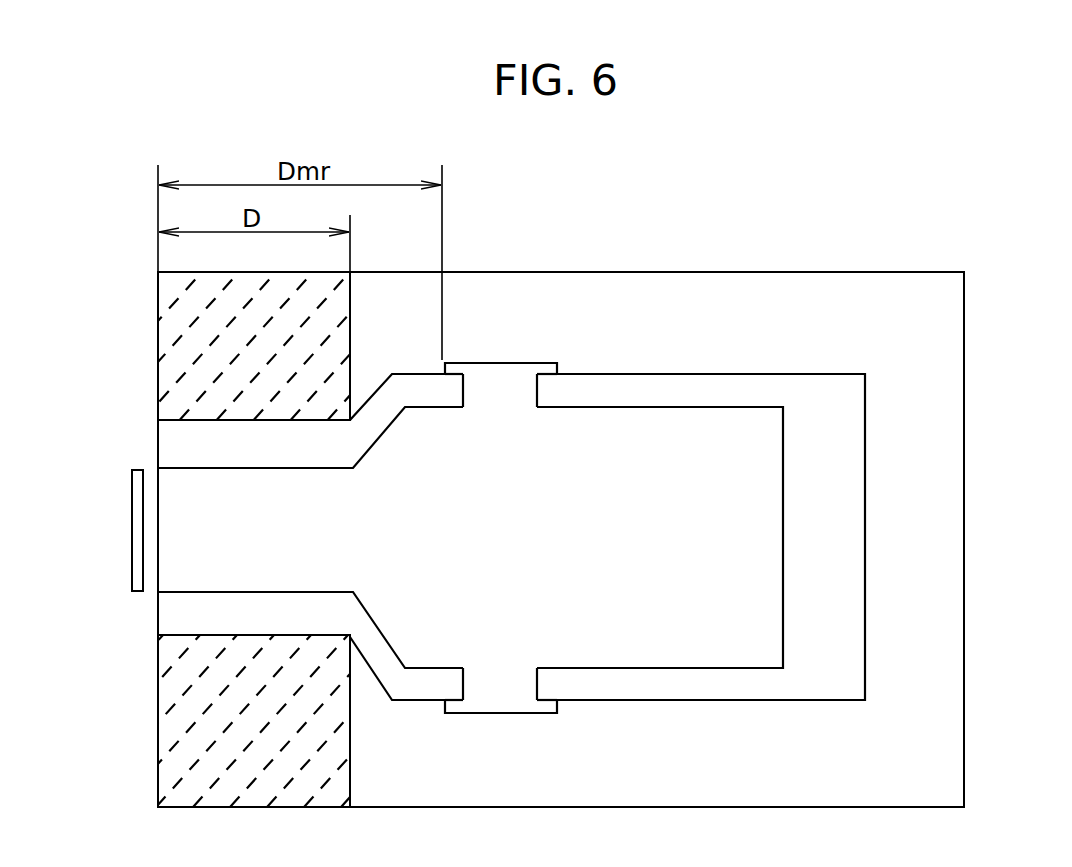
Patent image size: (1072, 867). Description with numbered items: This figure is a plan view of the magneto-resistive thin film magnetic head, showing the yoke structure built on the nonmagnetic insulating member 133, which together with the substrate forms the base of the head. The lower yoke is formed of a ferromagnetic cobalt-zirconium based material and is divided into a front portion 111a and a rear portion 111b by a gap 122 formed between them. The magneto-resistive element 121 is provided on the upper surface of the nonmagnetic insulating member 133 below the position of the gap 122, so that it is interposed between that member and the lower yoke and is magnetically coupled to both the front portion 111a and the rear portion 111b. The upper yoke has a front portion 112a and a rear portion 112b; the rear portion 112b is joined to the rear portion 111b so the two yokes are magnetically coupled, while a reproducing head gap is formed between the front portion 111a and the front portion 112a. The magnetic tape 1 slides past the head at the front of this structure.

The magnetic tape 1 is at (133, 500).
The front portion of the lower yoke 111a is at (213, 608).
The rear portion of the lower yoke 111b is at (827, 478).
The front portion of the upper yoke 112a is at (250, 523).
The rear portion of the upper yoke 112b is at (705, 490).
The magneto-resistive element 121 is at (500, 713).
The gap 122 is at (498, 382).
The nonmagnetic insulating member 133 is at (908, 653).